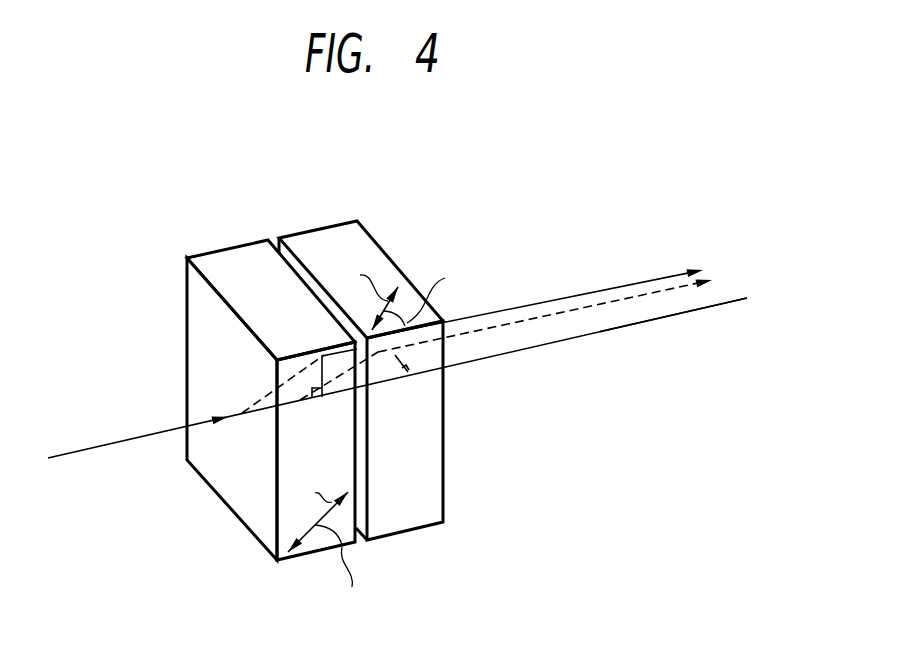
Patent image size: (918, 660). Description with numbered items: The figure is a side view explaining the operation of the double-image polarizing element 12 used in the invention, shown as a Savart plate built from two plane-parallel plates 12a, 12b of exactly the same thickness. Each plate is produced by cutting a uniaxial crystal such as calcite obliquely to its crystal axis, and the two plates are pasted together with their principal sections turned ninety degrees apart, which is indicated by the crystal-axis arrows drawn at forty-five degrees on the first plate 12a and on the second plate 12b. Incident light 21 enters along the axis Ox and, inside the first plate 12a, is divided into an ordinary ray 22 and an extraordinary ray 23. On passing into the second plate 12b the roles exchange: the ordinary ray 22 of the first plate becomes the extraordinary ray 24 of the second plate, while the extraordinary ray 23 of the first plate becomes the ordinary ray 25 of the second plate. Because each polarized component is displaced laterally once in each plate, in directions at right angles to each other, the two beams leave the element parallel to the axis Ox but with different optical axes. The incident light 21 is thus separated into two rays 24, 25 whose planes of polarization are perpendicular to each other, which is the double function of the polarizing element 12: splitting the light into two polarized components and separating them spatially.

The double-image polarizing element 12 is at (310, 160).
The first plane-parallel plate 12a is at (223, 255).
The second plane-parallel plate 12b is at (318, 232).
The incident light 21 is at (110, 442).
The ordinary ray 22 is at (303, 402).
The extraordinary ray 23 is at (300, 372).
The extraordinary ray 24 is at (378, 362).
The ordinary ray 25 is at (592, 295).
The optical axis Ox is at (735, 298).